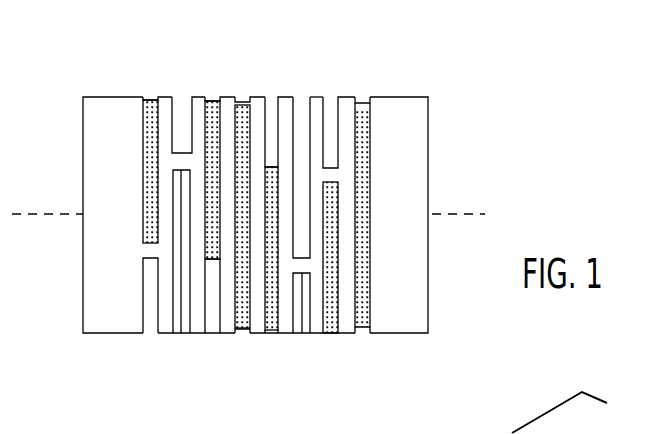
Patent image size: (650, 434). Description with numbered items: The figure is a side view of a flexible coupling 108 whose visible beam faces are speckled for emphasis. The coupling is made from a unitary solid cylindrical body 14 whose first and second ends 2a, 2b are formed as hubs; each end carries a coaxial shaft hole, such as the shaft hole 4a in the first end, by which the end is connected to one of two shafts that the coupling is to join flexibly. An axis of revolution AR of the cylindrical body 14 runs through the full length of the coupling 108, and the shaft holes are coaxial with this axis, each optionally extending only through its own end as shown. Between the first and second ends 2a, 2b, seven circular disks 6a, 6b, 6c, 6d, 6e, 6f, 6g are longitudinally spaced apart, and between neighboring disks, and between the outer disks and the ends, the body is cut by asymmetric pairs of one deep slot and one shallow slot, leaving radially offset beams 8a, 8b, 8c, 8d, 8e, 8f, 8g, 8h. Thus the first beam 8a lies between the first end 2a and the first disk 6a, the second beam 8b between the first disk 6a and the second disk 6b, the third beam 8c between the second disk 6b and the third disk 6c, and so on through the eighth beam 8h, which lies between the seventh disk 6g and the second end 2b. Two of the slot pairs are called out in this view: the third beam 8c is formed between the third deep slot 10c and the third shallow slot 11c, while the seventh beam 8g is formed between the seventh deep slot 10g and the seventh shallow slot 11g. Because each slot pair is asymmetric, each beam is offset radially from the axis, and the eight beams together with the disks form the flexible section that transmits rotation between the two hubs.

The flexible coupling 108 is at (436, 74).
The first end 2a is at (428, 137).
The second end 2b is at (91, 134).
The cylindrical body 14 is at (442, 285).
The first disk 6a is at (362, 96).
The second disk 6b is at (331, 96).
The third disk 6c is at (290, 95).
The fourth disk 6d is at (257, 95).
The fifth disk 6e is at (227, 95).
The sixth disk 6f is at (200, 95).
The seventh disk 6g is at (171, 94).
The first beam 8a is at (360, 335).
The second beam 8b is at (330, 335).
The third beam 8c is at (303, 336).
The fourth beam 8d is at (270, 335).
The fifth beam 8e is at (238, 335).
The sixth beam 8f is at (208, 335).
The seventh beam 8g is at (184, 335).
The eighth beam 8h is at (148, 335).
The third deep slot 10c is at (302, 112).
The seventh deep slot 10g is at (178, 341).
The third shallow slot 11c is at (298, 344).
The seventh shallow slot 11g is at (181, 109).
The axis of revolution AR is at (50, 215).
The shaft hole 4a is at (643, 365).